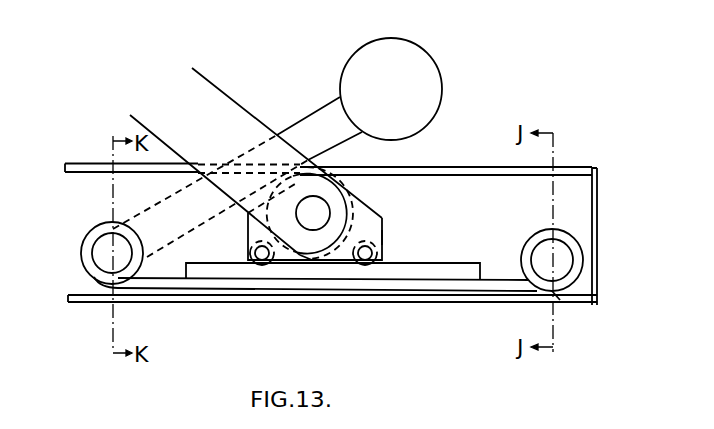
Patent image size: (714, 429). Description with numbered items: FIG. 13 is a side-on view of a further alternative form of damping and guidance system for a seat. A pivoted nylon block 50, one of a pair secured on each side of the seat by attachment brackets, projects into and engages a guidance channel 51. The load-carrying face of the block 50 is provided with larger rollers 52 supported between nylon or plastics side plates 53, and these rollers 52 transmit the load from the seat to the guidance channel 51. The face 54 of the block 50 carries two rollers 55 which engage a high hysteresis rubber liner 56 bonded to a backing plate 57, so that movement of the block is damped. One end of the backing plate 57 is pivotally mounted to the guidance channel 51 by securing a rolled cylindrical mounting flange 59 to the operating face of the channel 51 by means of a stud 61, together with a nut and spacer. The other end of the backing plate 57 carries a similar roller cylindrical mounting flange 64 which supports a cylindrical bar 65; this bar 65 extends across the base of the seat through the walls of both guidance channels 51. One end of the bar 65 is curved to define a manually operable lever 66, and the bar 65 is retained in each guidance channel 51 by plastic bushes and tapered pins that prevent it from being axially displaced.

The pivoted nylon block 50 is at (381, 217).
The guidance channel 51 is at (452, 167).
The larger rollers 52 is at (340, 187).
The side plates 53 is at (383, 230).
The face of block 54 is at (325, 266).
The rollers 55 is at (255, 268).
The high hysteresis rubber liner 56 is at (460, 272).
The backing plate 57 is at (428, 292).
The rolled cylindrical mounting flange 59 is at (575, 252).
The stud 61 is at (566, 276).
The roller cylindrical mounting flange 64 is at (116, 230).
The cylindrical bar 65 is at (103, 246).
The manually operable lever 66 is at (303, 122).